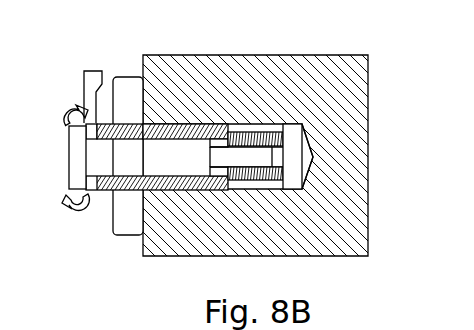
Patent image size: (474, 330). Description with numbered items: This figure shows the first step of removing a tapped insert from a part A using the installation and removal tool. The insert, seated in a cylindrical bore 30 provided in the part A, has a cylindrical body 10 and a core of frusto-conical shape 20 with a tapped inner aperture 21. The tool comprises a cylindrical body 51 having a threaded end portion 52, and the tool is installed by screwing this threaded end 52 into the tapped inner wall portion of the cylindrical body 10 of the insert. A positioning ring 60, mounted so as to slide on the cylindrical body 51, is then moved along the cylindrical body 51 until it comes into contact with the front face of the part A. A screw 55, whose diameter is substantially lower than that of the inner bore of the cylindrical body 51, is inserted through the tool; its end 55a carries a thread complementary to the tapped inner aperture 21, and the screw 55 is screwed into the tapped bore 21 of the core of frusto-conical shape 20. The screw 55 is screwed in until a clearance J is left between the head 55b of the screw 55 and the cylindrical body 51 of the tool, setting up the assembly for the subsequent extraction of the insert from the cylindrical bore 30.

The part A is at (250, 83).
The cylindrical body 10 is at (316, 102).
The core of frusto-conical shape 20 is at (286, 132).
The tapped inner aperture 21 is at (292, 150).
The cylindrical bore 30 is at (290, 116).
The cylindrical body 51 is at (129, 124).
The threaded end portion 52 is at (214, 123).
The screw 55 is at (142, 153).
The end of the screw 55a is at (260, 155).
The head of the screw 55b is at (73, 168).
The positioning ring 60 is at (130, 219).
The clearance J is at (82, 129).